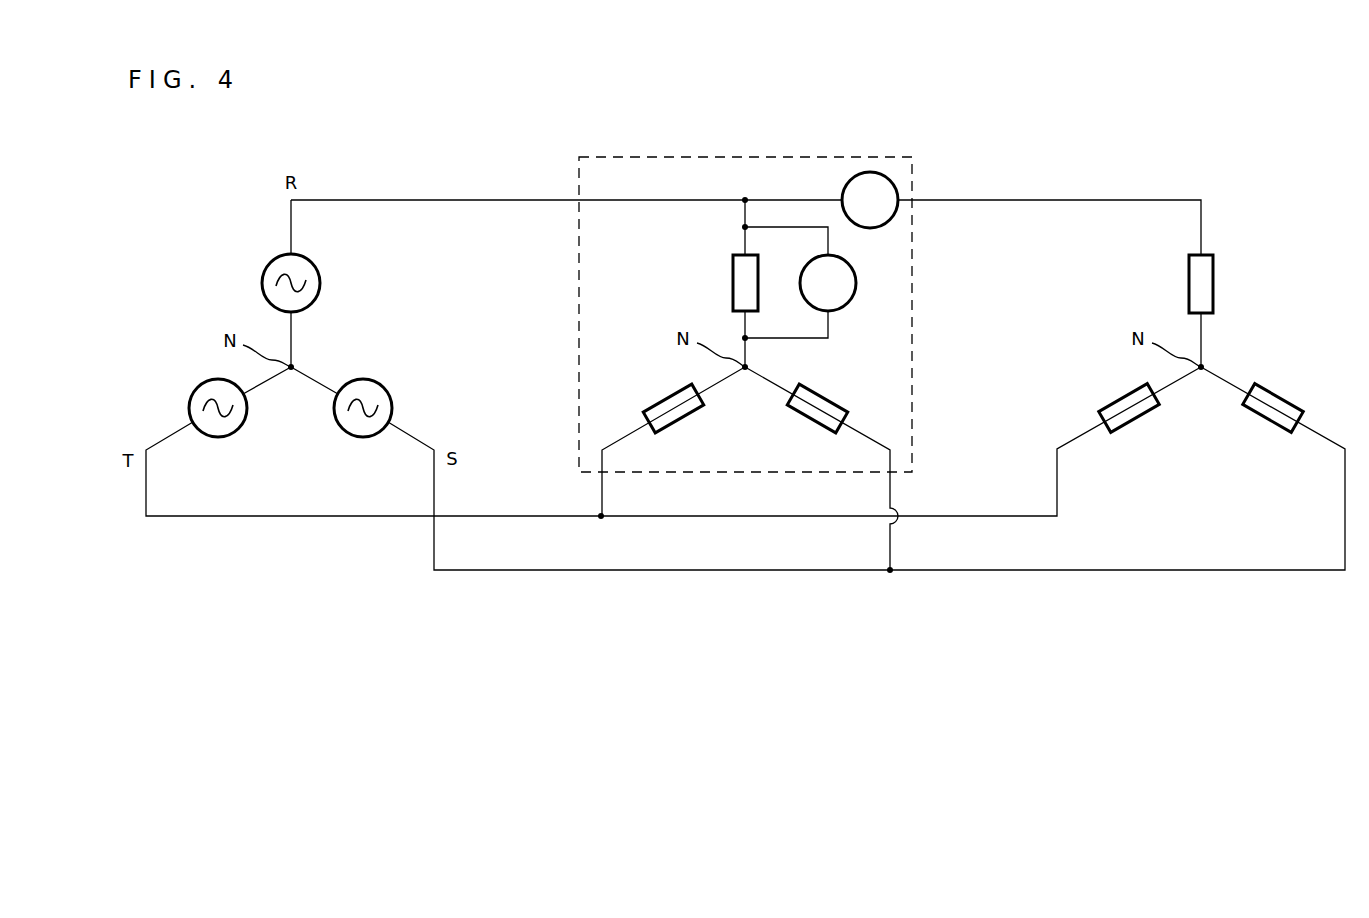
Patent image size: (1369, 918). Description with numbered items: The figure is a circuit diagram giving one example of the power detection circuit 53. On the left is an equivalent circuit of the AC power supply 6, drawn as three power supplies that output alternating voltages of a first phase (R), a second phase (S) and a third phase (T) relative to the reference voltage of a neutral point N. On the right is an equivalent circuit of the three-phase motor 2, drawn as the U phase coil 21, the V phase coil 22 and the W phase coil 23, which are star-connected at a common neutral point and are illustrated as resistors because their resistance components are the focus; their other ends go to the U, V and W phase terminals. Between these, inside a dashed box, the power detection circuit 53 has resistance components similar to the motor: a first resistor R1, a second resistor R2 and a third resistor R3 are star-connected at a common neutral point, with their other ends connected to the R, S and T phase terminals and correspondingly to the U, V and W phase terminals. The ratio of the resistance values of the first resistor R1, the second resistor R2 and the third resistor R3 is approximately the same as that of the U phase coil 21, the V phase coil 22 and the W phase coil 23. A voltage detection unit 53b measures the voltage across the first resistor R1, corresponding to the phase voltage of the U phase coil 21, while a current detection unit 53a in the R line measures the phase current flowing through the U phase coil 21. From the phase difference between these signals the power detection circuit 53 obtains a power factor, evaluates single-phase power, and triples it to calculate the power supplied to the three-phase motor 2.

The three-phase motor 2 is at (1255, 262).
The AC power supply 6 is at (226, 288).
The U phase coil 21 is at (1189, 290).
The V phase coil 22 is at (1120, 393).
The W phase coil 23 is at (1280, 393).
The power detection circuit 53 is at (800, 157).
The current detection unit 53a is at (890, 176).
The voltage detection unit 53b is at (857, 283).
The first resistor R1 is at (733, 290).
The second resistor R2 is at (668, 393).
The third resistor R3 is at (825, 393).